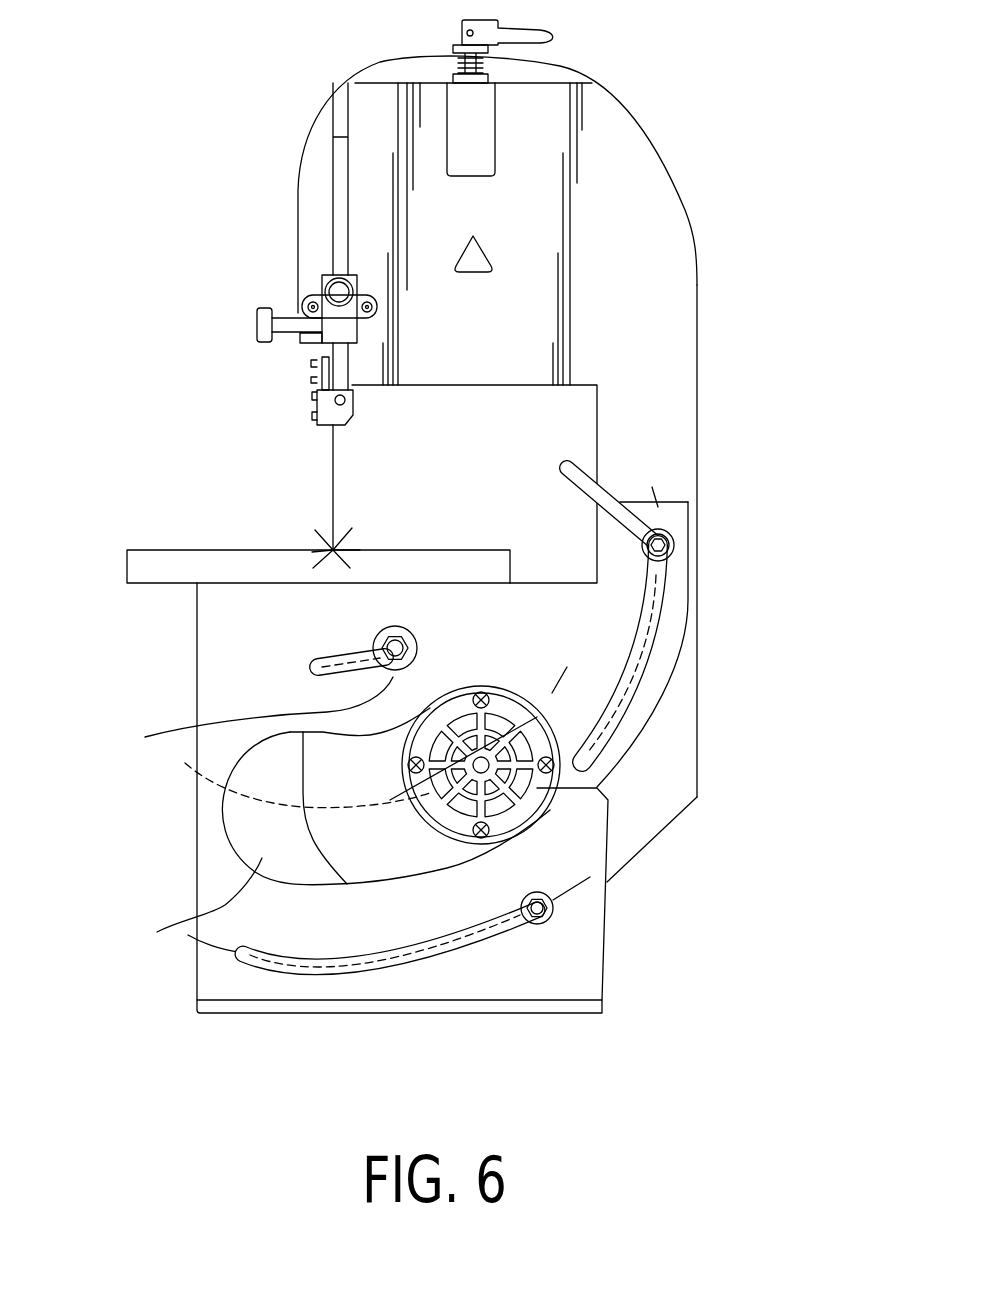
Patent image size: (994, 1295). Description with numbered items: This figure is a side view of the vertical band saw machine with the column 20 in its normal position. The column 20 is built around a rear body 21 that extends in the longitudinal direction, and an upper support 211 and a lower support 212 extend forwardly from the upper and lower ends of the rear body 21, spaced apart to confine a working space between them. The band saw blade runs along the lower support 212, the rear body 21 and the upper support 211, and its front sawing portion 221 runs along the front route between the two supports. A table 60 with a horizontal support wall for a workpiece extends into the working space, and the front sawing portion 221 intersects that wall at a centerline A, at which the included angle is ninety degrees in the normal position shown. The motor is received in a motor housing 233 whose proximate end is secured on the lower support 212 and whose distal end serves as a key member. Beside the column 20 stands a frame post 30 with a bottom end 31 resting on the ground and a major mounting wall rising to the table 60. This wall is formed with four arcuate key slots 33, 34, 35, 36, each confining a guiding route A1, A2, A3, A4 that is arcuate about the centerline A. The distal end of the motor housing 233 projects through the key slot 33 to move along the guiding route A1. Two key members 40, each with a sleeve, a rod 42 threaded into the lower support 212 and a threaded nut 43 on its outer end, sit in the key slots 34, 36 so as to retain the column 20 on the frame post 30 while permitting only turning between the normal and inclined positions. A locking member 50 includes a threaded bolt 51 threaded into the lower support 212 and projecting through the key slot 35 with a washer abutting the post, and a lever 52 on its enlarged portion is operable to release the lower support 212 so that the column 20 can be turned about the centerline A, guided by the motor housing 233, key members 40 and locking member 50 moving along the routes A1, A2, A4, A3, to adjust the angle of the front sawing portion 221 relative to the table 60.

The column 20 is at (663, 177).
The rear body 21 is at (697, 295).
The upper support 211 is at (583, 125).
The lower support 212 is at (632, 830).
The front sawing portion 221 is at (330, 445).
The motor housing 233 is at (597, 788).
The frame post 30 is at (196, 897).
The bottom end 31 is at (297, 1017).
The key slot 33 is at (192, 915).
The key slot 34 is at (317, 681).
The key slot 35 is at (660, 632).
The key slot 36 is at (482, 962).
The key member 40 is at (539, 930).
The rod 42 is at (393, 627).
The threaded nut 43 is at (648, 973).
The locking member 50 is at (655, 520).
The threaded bolt 51 is at (672, 533).
The lever 52 is at (603, 487).
The table 60 is at (127, 563).
The centerline A is at (327, 530).
The guiding route A1 is at (290, 795).
The guiding route A2 is at (292, 659).
The guiding route A3 is at (655, 585).
The guiding route A4 is at (413, 950).